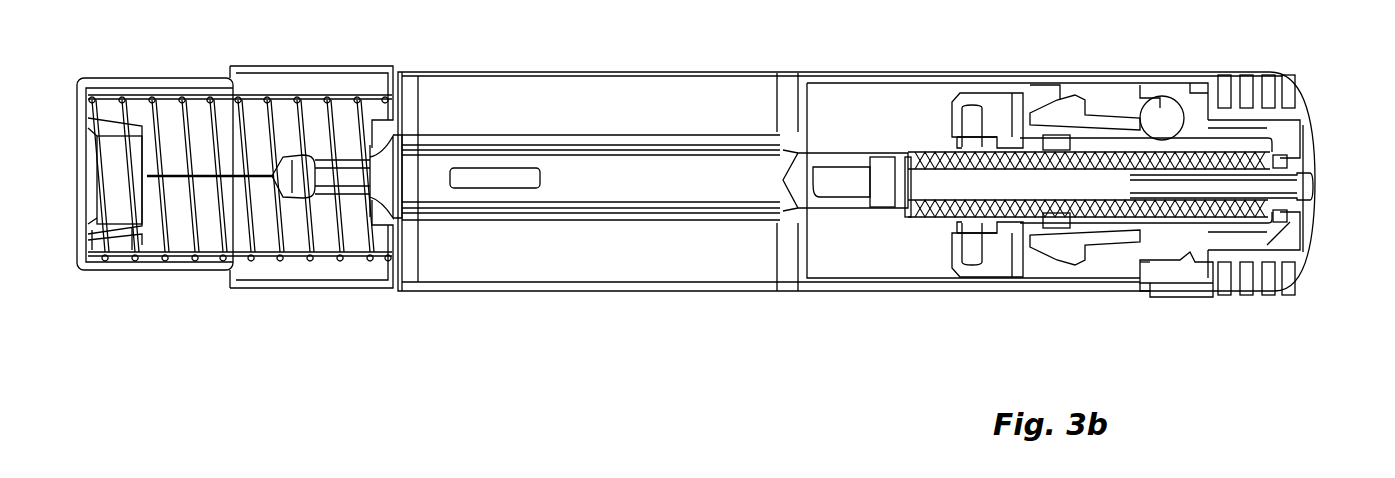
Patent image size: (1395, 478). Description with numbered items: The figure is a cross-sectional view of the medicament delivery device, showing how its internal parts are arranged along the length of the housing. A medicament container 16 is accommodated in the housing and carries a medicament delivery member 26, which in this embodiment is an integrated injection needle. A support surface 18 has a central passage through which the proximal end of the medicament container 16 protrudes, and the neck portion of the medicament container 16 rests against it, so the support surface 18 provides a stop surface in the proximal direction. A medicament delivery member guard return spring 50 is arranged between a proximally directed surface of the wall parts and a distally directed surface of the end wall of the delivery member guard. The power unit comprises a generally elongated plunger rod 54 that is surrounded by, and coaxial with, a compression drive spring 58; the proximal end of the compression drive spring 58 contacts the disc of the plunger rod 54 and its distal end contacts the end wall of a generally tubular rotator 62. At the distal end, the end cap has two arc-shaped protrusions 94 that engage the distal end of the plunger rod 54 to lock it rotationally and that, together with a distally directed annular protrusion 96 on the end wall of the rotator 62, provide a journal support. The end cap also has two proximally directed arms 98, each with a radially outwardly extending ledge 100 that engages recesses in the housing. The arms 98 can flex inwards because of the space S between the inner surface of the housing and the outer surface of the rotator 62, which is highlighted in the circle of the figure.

The medicament container 16 is at (652, 190).
The support surface 18 is at (395, 245).
The medicament delivery member 26 is at (205, 175).
The medicament delivery member guard return spring 50 is at (222, 235).
The plunger rod 54 is at (930, 170).
The compression drive spring 58 is at (1100, 205).
The rotator 62 is at (1108, 122).
The arc-shaped protrusions 94 is at (1302, 200).
The annular protrusion 96 is at (1287, 158).
The arms 98 is at (1180, 273).
The ledge 100 is at (1145, 288).
The space S is at (1180, 102).